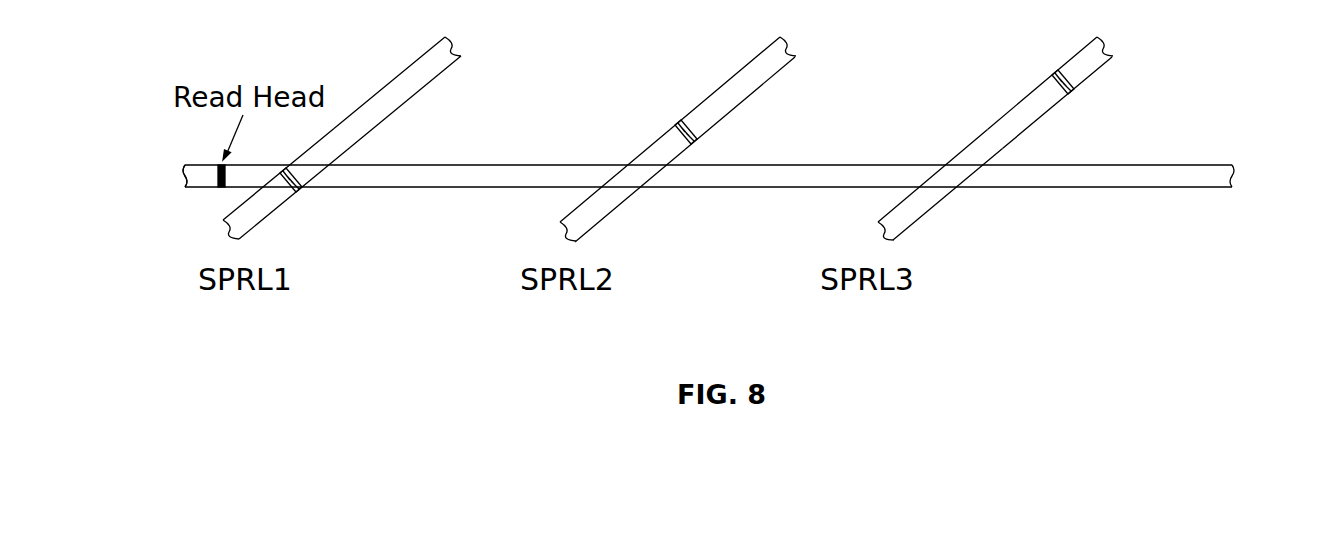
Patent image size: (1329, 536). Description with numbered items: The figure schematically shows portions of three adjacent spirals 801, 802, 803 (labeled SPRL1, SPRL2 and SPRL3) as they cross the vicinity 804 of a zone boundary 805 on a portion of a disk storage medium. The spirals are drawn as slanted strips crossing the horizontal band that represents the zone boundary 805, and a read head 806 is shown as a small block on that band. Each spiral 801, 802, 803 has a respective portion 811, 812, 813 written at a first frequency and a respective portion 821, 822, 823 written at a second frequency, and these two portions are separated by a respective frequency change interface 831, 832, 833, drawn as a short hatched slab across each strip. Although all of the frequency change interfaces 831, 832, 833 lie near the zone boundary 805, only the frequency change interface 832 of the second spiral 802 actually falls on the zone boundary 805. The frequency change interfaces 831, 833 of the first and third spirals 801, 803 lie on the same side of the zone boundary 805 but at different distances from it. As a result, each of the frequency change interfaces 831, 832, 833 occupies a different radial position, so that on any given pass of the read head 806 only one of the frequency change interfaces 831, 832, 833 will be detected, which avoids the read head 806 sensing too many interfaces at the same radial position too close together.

The spiral 801 is at (384, 124).
The spiral 802 is at (722, 124).
The spiral 803 is at (1041, 125).
The vicinity 804 is at (1242, 45).
The zone boundary 805 is at (178, 164).
The read head 806 is at (220, 190).
The portion 811 is at (253, 210).
The portion 812 is at (595, 210).
The portion 813 is at (907, 210).
The portion 821 is at (403, 88).
The portion 822 is at (750, 80).
The portion 823 is at (1083, 62).
The frequency change interface 831 is at (293, 177).
The frequency change interface 832 is at (691, 136).
The frequency change interface 833 is at (1061, 96).